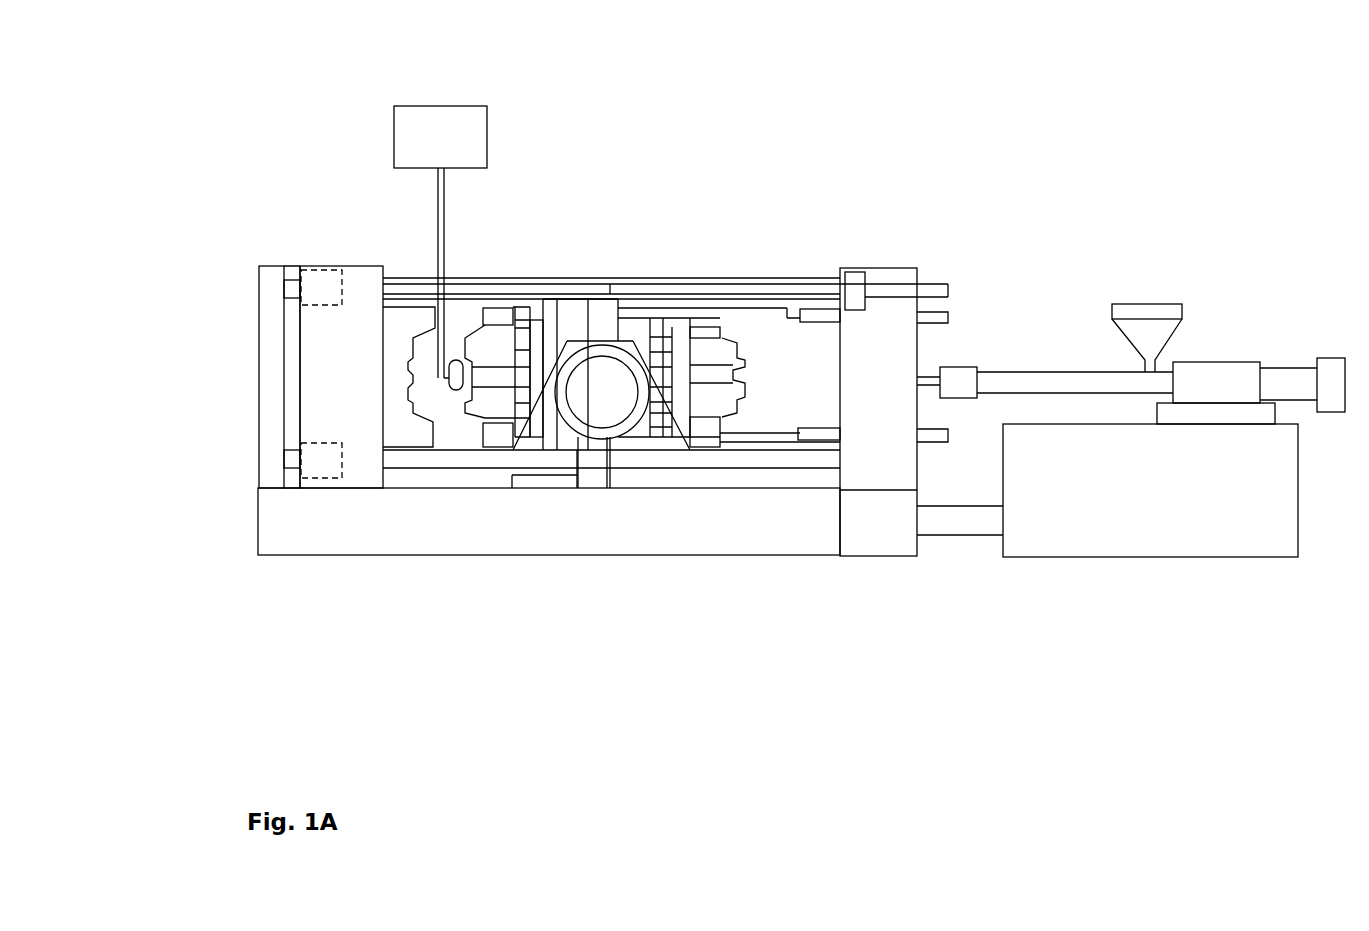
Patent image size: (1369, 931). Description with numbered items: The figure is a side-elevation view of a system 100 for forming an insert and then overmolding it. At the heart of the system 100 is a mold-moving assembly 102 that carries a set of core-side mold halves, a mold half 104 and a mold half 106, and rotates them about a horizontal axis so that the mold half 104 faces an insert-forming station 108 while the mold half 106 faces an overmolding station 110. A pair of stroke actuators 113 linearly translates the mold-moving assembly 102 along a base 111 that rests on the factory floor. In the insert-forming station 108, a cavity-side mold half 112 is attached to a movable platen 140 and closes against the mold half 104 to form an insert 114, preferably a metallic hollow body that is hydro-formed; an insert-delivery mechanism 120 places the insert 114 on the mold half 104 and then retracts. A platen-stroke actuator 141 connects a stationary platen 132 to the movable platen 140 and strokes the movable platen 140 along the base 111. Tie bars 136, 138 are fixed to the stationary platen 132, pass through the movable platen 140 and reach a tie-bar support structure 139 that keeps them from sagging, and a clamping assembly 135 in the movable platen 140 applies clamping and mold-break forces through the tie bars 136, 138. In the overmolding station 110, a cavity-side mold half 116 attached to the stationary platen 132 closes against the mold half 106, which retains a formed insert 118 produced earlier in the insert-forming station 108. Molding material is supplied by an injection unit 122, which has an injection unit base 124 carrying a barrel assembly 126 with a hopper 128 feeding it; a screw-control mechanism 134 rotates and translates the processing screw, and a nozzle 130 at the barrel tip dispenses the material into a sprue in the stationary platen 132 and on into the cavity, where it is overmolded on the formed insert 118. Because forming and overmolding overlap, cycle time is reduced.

The system 100 is at (1134, 223).
The mold-moving assembly 102 is at (597, 402).
The mold half 104 is at (497, 437).
The mold half 106 is at (726, 413).
The insert-forming station 108 is at (463, 591).
The overmolding station 110 is at (800, 595).
The base 111 is at (293, 522).
The mold half 112 is at (408, 432).
The stroke actuators 113 is at (823, 433).
The insert 114 is at (452, 357).
The mold half 116 is at (832, 404).
The formed insert 118 is at (743, 360).
The insert-delivery mechanism 120 is at (410, 138).
The injection unit 122 is at (1114, 593).
The injection unit base 124 is at (1253, 522).
The barrel assembly 126 is at (1068, 380).
The hopper 128 is at (1172, 308).
The nozzle 130 is at (930, 377).
The stationary platen 132 is at (887, 273).
The screw-control mechanism 134 is at (1338, 367).
The clamping assembly 135 is at (340, 277).
The tie bar 136 is at (297, 277).
The tie bar 138 is at (293, 458).
The tie-bar support structure 139 is at (270, 345).
The movable platen 140 is at (370, 277).
The platen-stroke actuator 141 is at (648, 290).